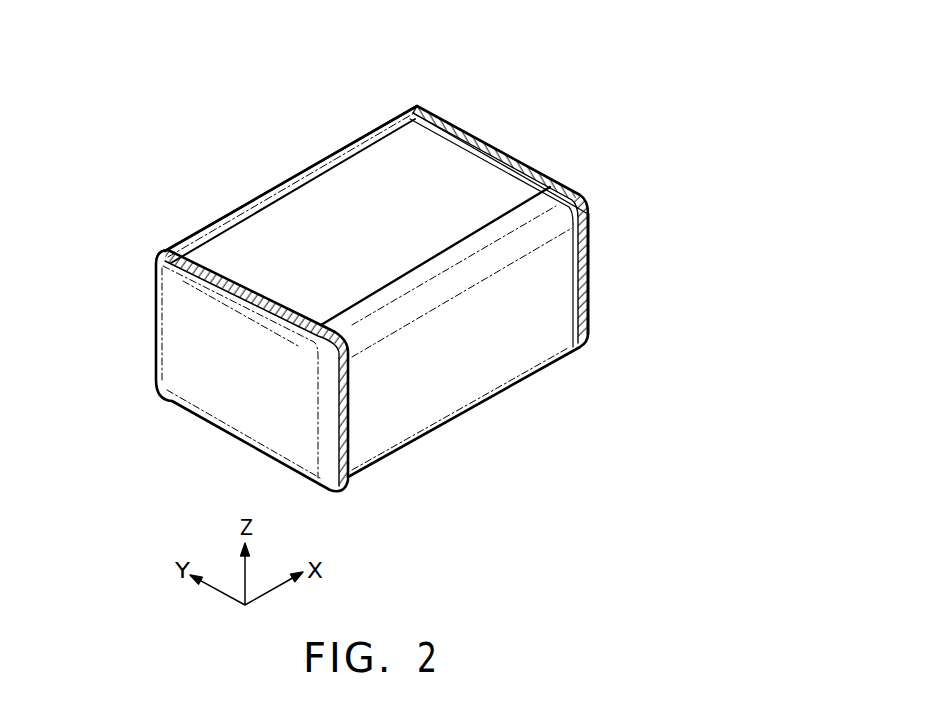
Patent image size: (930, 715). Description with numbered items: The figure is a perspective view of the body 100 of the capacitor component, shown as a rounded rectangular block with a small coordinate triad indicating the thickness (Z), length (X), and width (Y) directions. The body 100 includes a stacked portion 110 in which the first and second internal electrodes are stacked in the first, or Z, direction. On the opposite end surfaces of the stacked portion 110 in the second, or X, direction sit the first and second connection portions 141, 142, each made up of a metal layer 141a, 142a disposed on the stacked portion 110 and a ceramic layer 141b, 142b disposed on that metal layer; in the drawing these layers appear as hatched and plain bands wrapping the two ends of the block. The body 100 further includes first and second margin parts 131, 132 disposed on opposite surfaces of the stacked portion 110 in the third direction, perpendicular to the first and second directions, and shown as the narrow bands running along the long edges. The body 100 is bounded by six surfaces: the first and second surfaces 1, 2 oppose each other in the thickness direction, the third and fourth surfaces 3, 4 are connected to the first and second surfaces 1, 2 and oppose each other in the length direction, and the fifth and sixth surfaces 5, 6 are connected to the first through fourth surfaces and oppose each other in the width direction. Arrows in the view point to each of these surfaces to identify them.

The body 100 is at (162, 26).
The stacked portion 110 is at (372, 172).
The first surface 1 is at (413, 447).
The second surface 2 is at (407, 155).
The third surface 3 is at (187, 341).
The fourth surface 4 is at (590, 236).
The fifth surface 5 is at (477, 358).
The sixth surface 6 is at (322, 152).
The first margin part 131 is at (537, 208).
The second margin part 132 is at (261, 205).
The first connection portion 141 is at (210, 180).
The metal layer 141a is at (171, 262).
The ceramic layer 141b is at (167, 246).
The second connection portion 142 is at (583, 82).
The metal layer 142a is at (481, 148).
The ceramic layer 142b is at (536, 172).